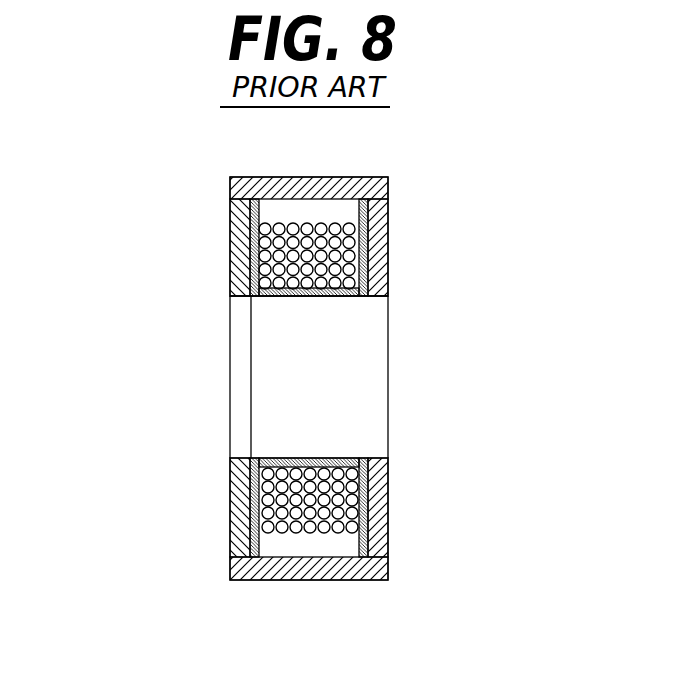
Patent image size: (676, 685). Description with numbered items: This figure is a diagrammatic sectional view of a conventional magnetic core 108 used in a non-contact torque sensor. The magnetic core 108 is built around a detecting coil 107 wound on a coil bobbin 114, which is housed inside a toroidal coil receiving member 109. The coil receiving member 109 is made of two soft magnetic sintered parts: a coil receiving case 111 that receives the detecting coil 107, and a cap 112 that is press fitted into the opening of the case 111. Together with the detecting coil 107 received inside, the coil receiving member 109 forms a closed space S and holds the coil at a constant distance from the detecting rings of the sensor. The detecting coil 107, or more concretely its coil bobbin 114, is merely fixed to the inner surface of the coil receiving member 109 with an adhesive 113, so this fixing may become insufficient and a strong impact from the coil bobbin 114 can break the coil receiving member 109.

The detecting coil 107 is at (388, 213).
The magnetic core 108 is at (314, 353).
The coil receiving member 109 is at (227, 237).
The coil receiving case 111 is at (230, 187).
The cap 112 is at (240, 270).
The adhesive 113 is at (388, 283).
The coil bobbin 114 is at (282, 297).
The closed space S is at (322, 213).